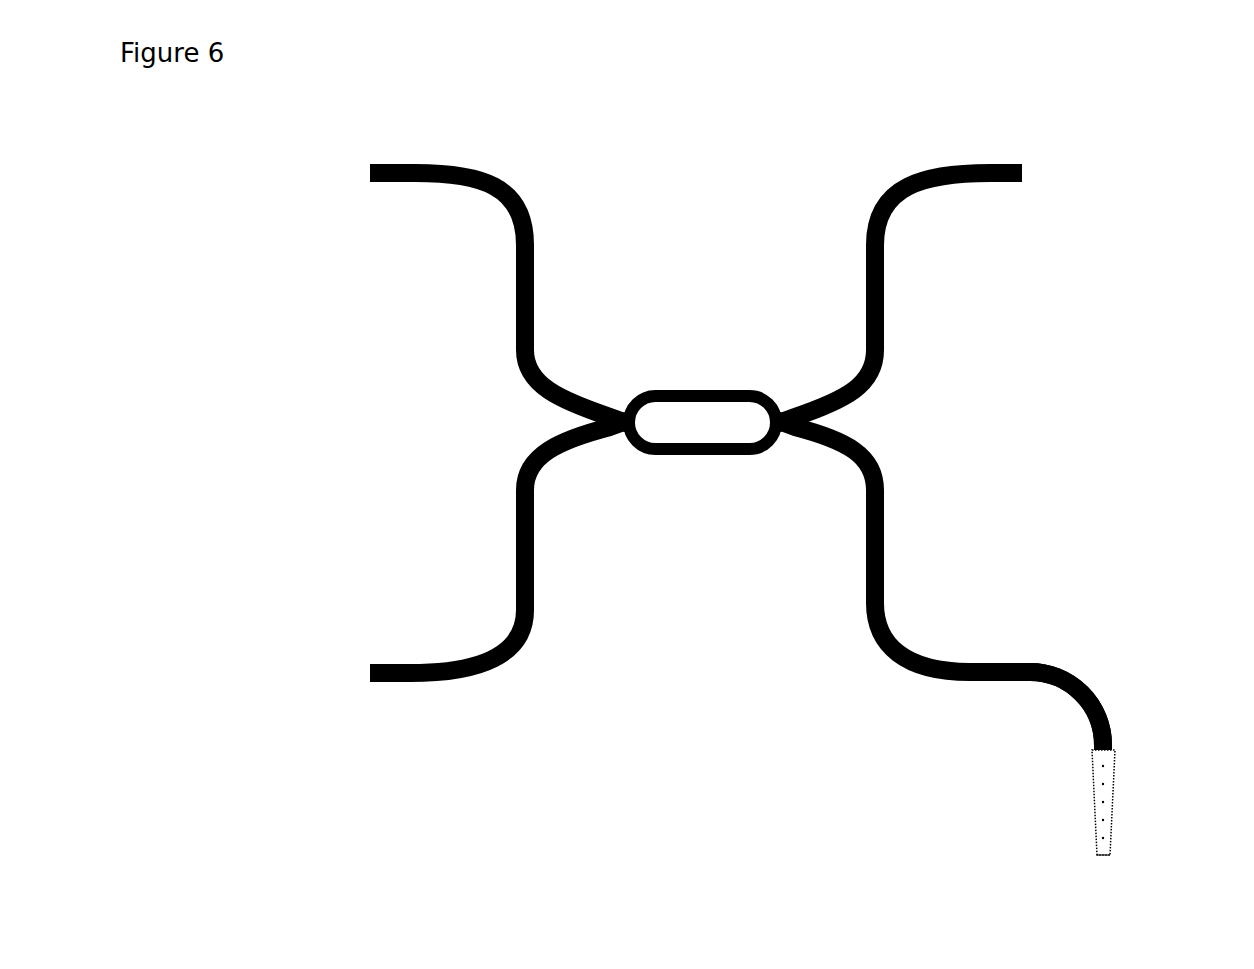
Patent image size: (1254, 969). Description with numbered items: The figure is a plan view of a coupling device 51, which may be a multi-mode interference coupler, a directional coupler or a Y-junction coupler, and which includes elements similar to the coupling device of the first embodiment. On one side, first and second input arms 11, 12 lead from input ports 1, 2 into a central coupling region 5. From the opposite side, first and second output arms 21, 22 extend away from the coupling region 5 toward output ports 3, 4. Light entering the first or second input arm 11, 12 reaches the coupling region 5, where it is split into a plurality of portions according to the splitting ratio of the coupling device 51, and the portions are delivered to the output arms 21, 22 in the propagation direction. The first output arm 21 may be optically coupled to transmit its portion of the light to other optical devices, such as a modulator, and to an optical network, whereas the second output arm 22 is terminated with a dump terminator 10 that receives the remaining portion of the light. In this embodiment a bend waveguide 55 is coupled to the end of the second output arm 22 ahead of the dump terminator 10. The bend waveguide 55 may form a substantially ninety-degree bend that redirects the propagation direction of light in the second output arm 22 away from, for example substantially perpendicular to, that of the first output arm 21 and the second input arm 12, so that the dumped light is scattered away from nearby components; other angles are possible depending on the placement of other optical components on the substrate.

The coupling device 51 is at (322, 433).
The first input arm 11 is at (433, 165).
The input port 1 is at (367, 173).
The second input arm 12 is at (417, 680).
The input port 2 is at (368, 677).
The first output arm 21 is at (983, 163).
The output port 3 is at (1023, 172).
The second output arm 22 is at (947, 673).
The bend waveguide 55 is at (1083, 690).
The coupling region 5 is at (707, 390).
The dump terminator 10 is at (1112, 807).
The output port 4 is at (1100, 857).